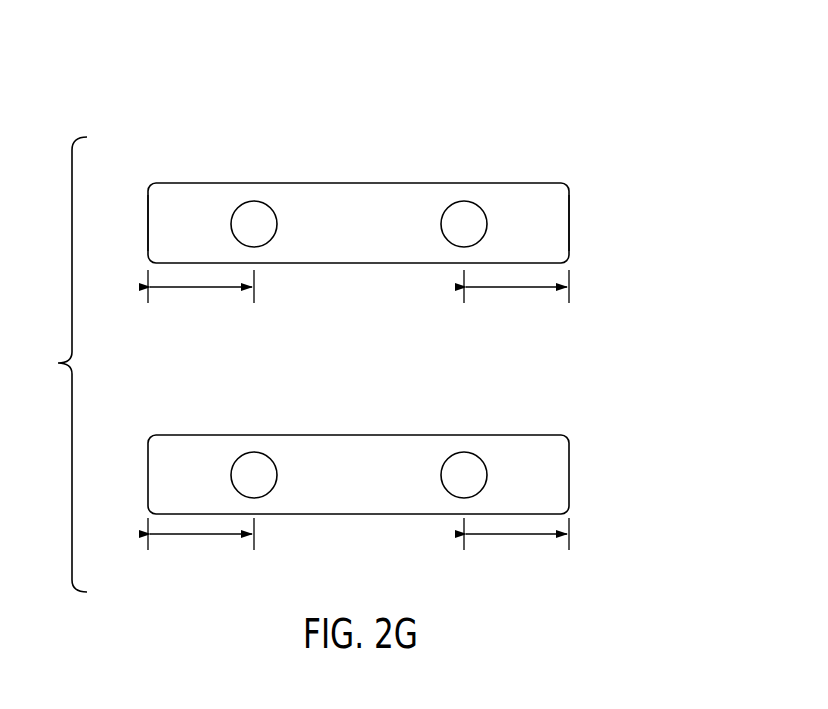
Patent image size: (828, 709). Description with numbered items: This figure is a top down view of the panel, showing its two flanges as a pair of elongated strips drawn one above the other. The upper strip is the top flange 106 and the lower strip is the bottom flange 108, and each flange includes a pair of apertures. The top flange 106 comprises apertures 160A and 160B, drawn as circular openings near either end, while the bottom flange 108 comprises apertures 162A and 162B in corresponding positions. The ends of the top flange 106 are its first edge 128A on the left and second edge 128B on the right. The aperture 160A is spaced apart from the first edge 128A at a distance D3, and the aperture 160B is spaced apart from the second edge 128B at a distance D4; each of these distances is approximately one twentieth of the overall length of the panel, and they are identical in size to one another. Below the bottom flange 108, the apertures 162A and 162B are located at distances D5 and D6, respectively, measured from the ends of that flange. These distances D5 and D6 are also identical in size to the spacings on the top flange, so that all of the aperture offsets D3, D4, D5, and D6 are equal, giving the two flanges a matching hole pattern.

The top flange 106 is at (547, 195).
The bottom flange 108 is at (547, 445).
The first edge 128A is at (148, 227).
The second edge 128B is at (570, 224).
The aperture 160A is at (252, 201).
The aperture 160B is at (462, 201).
The aperture 162A is at (252, 452).
The aperture 162B is at (462, 452).
The distance D3 is at (202, 289).
The distance D4 is at (518, 289).
The distance D5 is at (202, 537).
The distance D6 is at (518, 537).